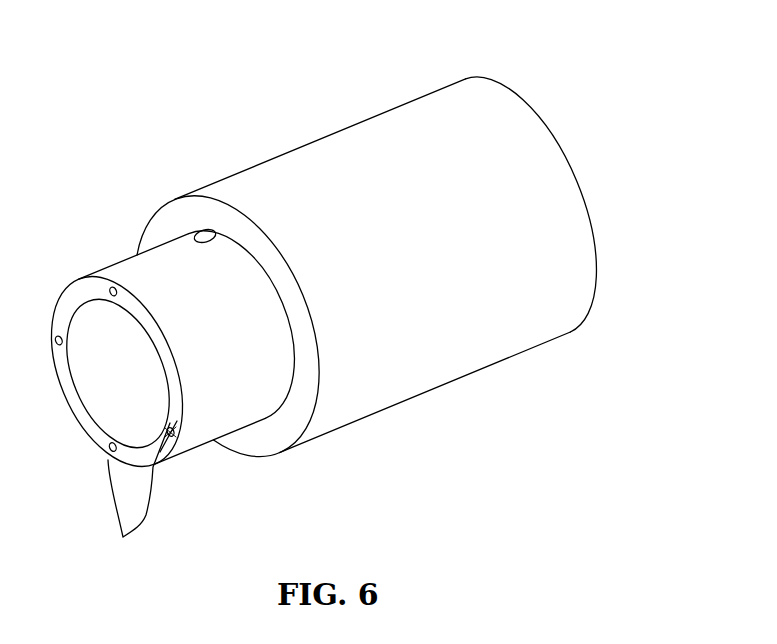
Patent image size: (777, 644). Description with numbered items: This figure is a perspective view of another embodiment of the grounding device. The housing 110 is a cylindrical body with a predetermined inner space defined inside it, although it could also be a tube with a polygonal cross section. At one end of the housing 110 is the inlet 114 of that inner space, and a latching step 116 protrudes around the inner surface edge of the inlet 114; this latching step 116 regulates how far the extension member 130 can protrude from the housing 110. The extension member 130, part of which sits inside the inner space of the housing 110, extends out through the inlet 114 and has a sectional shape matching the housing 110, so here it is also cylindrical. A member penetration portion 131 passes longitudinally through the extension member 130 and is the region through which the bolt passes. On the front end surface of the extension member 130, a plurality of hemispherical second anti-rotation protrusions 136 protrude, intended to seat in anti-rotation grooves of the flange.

The housing 110 is at (321, 139).
The inlet 114 is at (196, 229).
The latching step 116 is at (281, 434).
The extension member 130 is at (115, 265).
The member penetration portion 131 is at (140, 386).
The second anti-rotation protrusion 136 is at (123, 537).